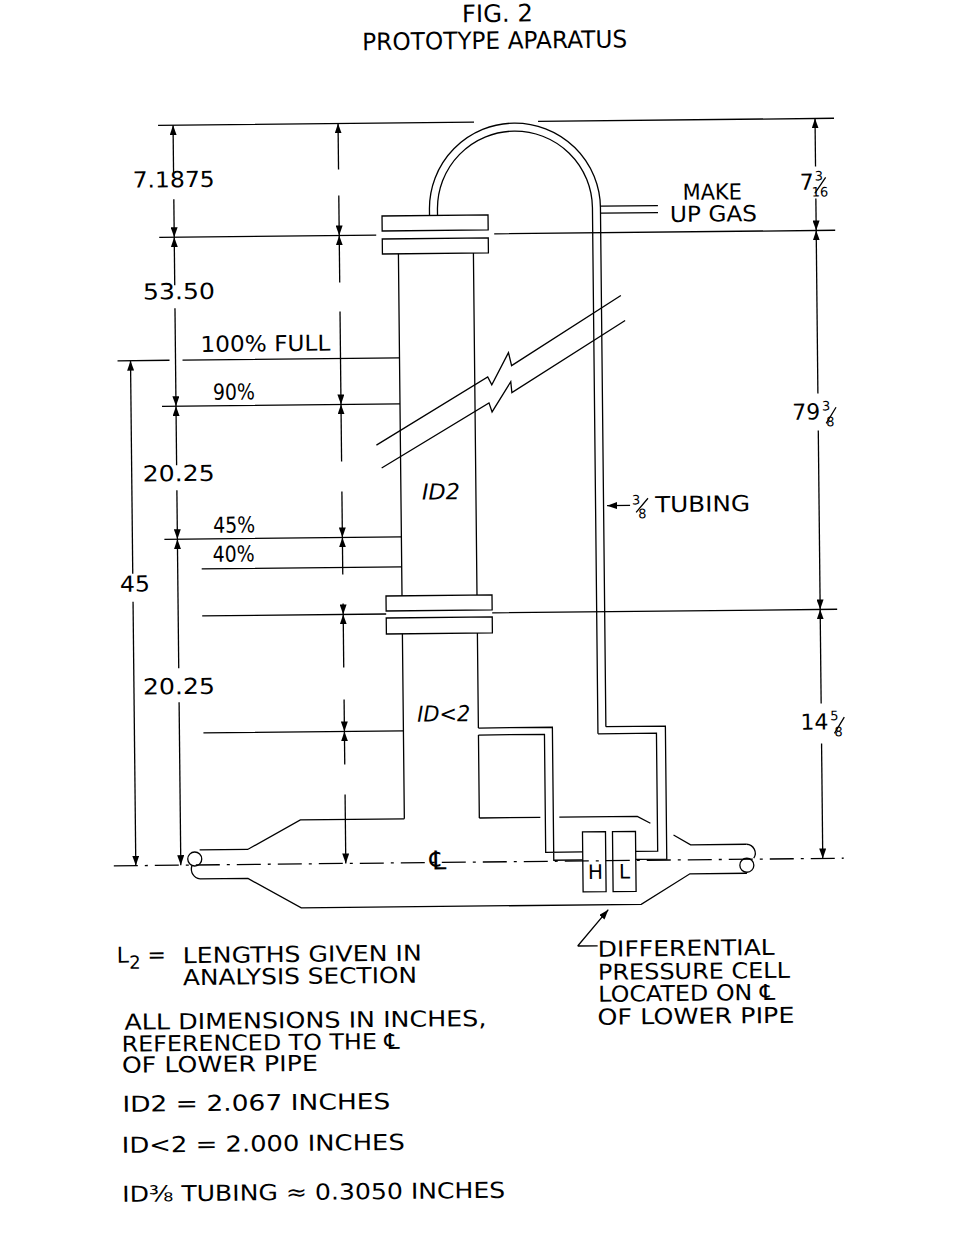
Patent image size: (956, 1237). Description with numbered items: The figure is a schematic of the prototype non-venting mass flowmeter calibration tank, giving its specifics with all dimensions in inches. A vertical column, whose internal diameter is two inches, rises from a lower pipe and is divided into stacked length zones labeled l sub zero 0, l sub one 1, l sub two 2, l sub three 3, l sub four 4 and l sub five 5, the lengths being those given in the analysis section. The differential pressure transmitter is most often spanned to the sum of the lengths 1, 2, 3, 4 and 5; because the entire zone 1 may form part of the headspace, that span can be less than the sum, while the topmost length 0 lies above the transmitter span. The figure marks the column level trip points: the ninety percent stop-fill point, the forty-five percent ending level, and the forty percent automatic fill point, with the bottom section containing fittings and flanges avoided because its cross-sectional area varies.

The length L0 (top of U-tube to upper flange) 0 is at (338, 179).
The l1 zone 1 is at (338, 319).
The l2 length 2 is at (338, 470).
The l3 length 3 is at (338, 575).
The l4 length 4 is at (338, 672).
The l5 length 5 is at (338, 797).